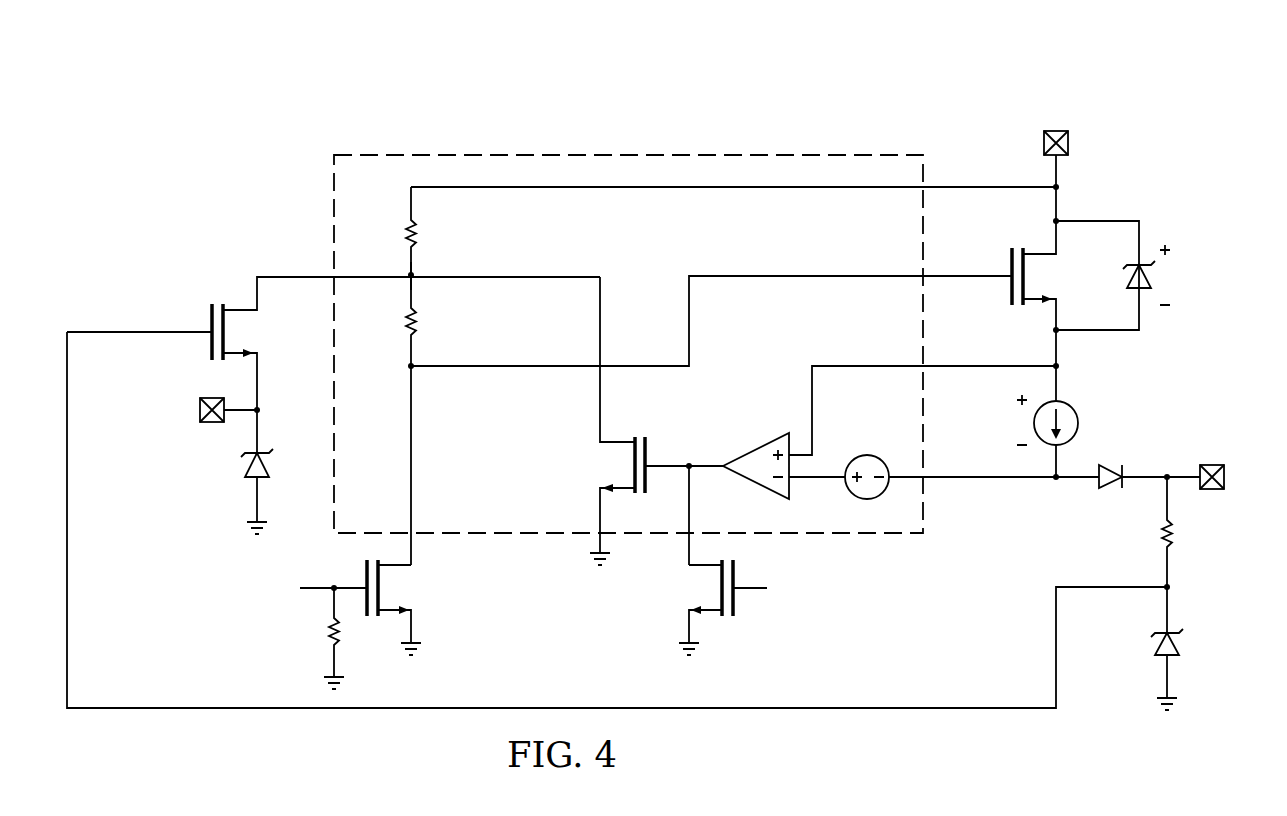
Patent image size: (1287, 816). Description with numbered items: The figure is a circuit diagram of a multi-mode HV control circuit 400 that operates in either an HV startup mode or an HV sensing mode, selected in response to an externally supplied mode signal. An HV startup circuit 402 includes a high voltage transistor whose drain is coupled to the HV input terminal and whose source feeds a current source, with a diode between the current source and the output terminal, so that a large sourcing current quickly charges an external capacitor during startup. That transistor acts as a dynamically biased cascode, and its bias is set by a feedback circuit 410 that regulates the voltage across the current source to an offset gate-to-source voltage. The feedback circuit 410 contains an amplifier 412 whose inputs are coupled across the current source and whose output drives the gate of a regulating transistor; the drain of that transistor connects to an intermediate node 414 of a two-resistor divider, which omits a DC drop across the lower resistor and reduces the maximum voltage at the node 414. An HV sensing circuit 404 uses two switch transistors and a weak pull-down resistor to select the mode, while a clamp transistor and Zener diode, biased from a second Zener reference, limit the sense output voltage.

The multi-mode HV control circuit 400 is at (441, 86).
The HV startup circuit 402 is at (1133, 186).
The HV sensing circuit 404 is at (274, 224).
The feedback circuit 410 is at (624, 147).
The amplifier 412 is at (756, 447).
The intermediate node 414 is at (406, 273).